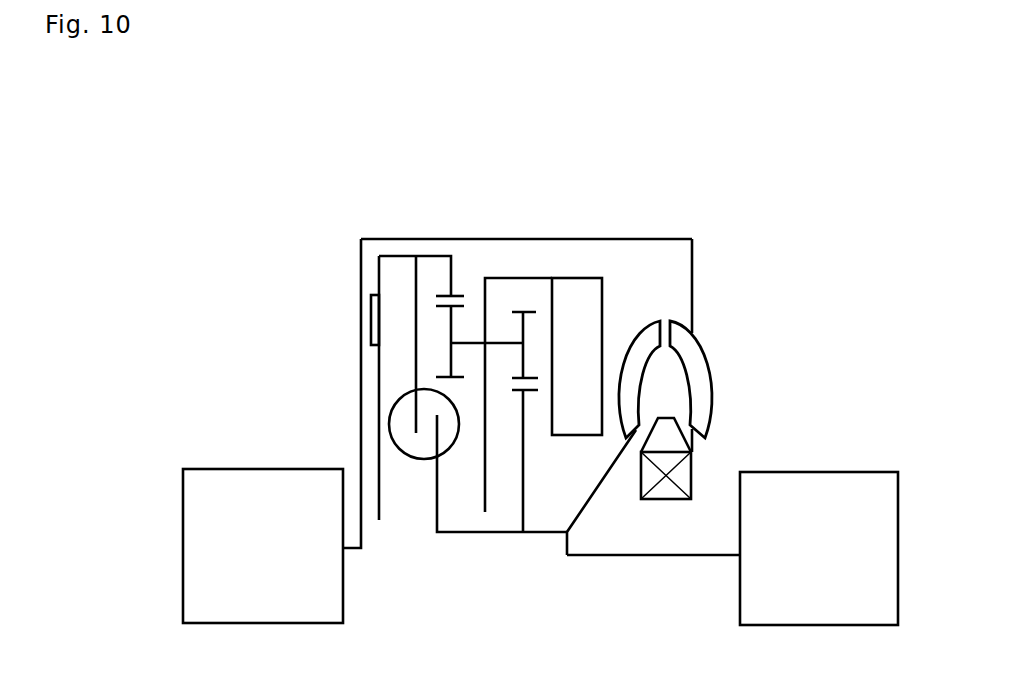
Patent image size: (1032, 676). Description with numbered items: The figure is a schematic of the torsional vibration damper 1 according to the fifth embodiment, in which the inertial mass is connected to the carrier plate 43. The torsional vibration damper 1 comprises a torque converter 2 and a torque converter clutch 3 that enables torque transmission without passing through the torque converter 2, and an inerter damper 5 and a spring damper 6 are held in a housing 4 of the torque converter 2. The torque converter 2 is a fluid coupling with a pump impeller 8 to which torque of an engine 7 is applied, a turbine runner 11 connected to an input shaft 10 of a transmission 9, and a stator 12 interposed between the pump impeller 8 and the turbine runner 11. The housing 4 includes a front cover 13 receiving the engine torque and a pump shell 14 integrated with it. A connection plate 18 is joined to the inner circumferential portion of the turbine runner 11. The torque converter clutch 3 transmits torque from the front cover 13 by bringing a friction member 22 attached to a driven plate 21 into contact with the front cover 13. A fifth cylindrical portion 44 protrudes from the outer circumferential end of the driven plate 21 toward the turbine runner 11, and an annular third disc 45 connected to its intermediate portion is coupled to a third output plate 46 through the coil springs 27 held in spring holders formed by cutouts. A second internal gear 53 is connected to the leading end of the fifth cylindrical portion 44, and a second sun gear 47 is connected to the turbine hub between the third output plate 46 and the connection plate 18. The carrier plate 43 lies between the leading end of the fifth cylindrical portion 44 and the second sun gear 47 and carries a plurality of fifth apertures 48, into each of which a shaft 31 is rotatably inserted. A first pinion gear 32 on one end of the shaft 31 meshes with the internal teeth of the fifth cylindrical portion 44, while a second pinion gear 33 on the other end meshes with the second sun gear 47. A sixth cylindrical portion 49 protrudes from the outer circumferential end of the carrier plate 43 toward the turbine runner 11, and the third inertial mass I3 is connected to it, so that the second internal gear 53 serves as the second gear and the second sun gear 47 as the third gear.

The torsional vibration damper 1 is at (411, 176).
The torque converter 2 is at (736, 317).
The torque converter clutch 3 is at (379, 253).
The housing 4 is at (658, 238).
The inerter damper 5 is at (624, 280).
The spring damper 6 is at (414, 473).
The engine 7 is at (258, 624).
The pump impeller 8 is at (707, 386).
The transmission 9 is at (822, 626).
The input shaft 10 is at (658, 557).
The turbine runner 11 is at (649, 333).
The stator 12 is at (680, 443).
The front cover 13 is at (361, 373).
The pump shell 14 is at (708, 348).
The connection plate 18 is at (603, 481).
The driven plate 21 is at (378, 408).
The friction member 22 is at (370, 318).
The coil springs 27 is at (447, 449).
The shaft 31 is at (497, 345).
The first pinion gear 32 is at (460, 307).
The second pinion gear 33 is at (534, 310).
The carrier plate 43 is at (486, 502).
The fifth cylindrical portion 44 is at (439, 253).
The third disc 45 is at (415, 285).
The third output plate 46 is at (437, 503).
The second sun gear 47 is at (532, 392).
The fifth apertures 48 is at (485, 343).
The sixth cylindrical portion 49 is at (533, 278).
The second internal gear 53 is at (442, 292).
The third inertial mass I3 is at (575, 290).